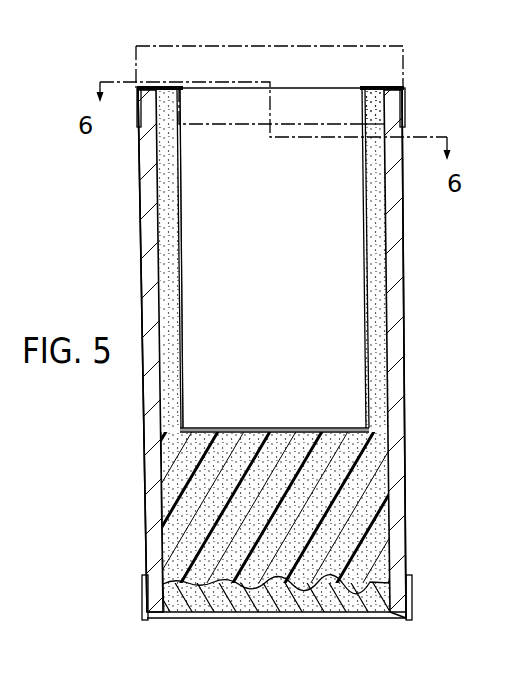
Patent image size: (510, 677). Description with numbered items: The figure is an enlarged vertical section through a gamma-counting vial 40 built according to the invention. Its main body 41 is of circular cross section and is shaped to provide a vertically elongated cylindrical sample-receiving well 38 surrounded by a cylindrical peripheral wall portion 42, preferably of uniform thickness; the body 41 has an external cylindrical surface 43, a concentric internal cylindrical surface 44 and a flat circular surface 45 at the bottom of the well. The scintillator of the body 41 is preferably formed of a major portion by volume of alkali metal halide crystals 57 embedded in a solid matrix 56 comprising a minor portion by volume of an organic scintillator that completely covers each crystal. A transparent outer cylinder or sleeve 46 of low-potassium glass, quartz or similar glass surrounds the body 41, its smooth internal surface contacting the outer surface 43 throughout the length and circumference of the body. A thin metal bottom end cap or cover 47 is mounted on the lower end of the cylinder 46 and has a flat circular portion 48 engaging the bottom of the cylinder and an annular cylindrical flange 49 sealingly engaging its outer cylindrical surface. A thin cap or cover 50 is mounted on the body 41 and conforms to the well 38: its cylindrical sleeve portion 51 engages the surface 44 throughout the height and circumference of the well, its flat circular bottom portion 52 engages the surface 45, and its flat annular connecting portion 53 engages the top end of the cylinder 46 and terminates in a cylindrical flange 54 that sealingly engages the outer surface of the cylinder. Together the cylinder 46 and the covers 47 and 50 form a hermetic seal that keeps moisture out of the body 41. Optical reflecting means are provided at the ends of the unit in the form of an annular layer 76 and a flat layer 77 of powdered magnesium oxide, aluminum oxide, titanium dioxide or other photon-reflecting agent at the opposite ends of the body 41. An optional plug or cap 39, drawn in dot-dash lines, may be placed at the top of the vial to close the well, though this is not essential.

The sample-receiving well 38 is at (383, 252).
The plug or cap 39 is at (288, 46).
The gamma-counting vial 40 is at (138, 251).
The main body 41 is at (378, 497).
The peripheral wall portion 42 is at (170, 292).
The external cylindrical surface 43 is at (388, 324).
The internal cylindrical surface 44 is at (179, 236).
The flat circular surface 45 is at (292, 431).
The outer cylinder or sleeve 46 is at (150, 500).
The bottom end cap or cover 47 is at (320, 619).
The flat circular portion 48 is at (275, 617).
The annular cylindrical flange 49 is at (142, 585).
The cap or cover 50 is at (358, 297).
The cylindrical sleeve portion 51 is at (184, 293).
The flat circular bottom portion 52 is at (247, 428).
The flat annular connecting portion 53 is at (160, 86).
The cylindrical flange 54 is at (140, 124).
The solid matrix 56 is at (170, 410).
The alkali metal halide crystals 57 is at (167, 373).
The annular layer 76 is at (370, 88).
The flat layer 77 is at (217, 600).